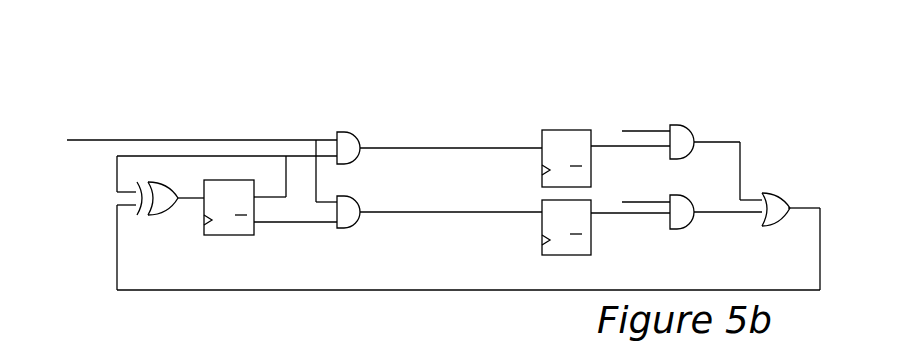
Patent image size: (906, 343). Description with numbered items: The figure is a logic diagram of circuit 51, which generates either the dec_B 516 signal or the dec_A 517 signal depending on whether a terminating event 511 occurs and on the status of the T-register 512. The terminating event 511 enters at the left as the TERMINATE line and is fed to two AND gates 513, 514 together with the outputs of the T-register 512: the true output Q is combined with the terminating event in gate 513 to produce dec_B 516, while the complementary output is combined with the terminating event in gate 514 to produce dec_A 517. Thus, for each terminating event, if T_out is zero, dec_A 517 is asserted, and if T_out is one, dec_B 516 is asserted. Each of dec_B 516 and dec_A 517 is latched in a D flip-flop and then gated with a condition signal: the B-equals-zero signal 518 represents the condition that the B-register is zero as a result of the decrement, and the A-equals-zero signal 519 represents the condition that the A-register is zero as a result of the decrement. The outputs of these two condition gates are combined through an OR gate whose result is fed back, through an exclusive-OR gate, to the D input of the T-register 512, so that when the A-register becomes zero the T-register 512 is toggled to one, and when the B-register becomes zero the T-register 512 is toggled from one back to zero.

The circuit 51 is at (674, 60).
The terminating event 511 is at (170, 126).
The T-register 512 is at (220, 236).
The AND gate 513 is at (352, 132).
The AND gate 514 is at (350, 226).
The dec_B signal 516 is at (467, 125).
The dec_A signal 517 is at (450, 214).
The B==0 signal 518 is at (657, 110).
The A==0 signal 519 is at (672, 183).